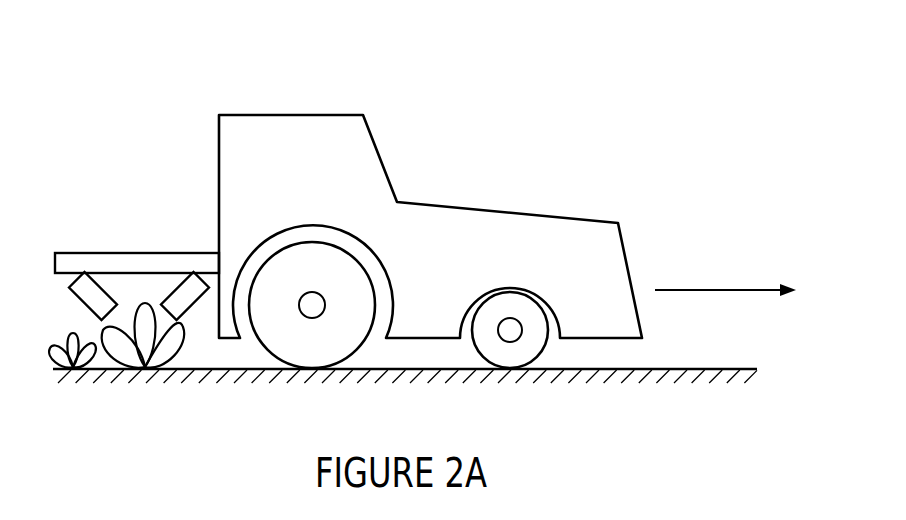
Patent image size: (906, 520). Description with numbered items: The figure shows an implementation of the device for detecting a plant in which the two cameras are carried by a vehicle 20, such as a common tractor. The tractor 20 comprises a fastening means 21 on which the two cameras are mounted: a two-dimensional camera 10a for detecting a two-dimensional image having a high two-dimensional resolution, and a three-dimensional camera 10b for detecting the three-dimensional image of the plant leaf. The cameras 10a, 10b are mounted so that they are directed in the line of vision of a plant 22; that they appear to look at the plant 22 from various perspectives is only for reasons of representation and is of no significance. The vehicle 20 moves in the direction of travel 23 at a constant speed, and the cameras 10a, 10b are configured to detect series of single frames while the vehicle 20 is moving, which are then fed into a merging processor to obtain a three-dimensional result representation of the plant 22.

The vehicle 20 is at (283, 114).
The fastening means 21 is at (136, 252).
The 2D camera 10a is at (98, 279).
The 3D camera 10b is at (172, 288).
The plant 22 is at (130, 326).
The direction of travel 23 is at (726, 291).